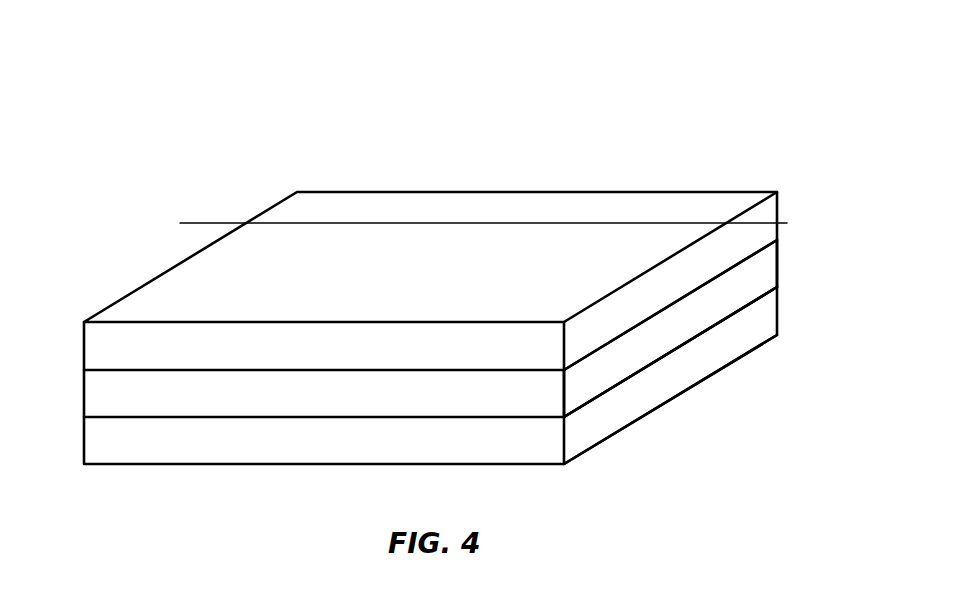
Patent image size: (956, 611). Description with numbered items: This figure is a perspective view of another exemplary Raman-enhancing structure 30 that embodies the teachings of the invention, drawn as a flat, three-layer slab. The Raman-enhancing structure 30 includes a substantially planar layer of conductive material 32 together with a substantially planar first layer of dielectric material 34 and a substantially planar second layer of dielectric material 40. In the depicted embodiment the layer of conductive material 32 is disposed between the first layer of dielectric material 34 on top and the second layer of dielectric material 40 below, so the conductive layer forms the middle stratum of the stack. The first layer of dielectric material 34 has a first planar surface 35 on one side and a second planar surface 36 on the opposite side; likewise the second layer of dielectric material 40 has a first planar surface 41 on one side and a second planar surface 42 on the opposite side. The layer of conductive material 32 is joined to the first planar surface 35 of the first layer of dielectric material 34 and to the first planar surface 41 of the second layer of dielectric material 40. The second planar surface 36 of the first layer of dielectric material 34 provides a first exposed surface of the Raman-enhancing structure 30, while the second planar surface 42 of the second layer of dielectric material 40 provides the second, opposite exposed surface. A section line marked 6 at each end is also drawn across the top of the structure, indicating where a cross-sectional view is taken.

The Raman-enhancing structure 30 is at (443, 258).
The layer of conductive material 32 is at (102, 393).
The first layer of dielectric material 34 is at (100, 345).
The first planar surface 35 is at (752, 251).
The second planar surface 36 is at (732, 203).
The second layer of dielectric material 40 is at (106, 440).
The first planar surface 41 is at (756, 294).
The second planar surface 42 is at (758, 341).
The section line 6- 6 is at (180, 223).